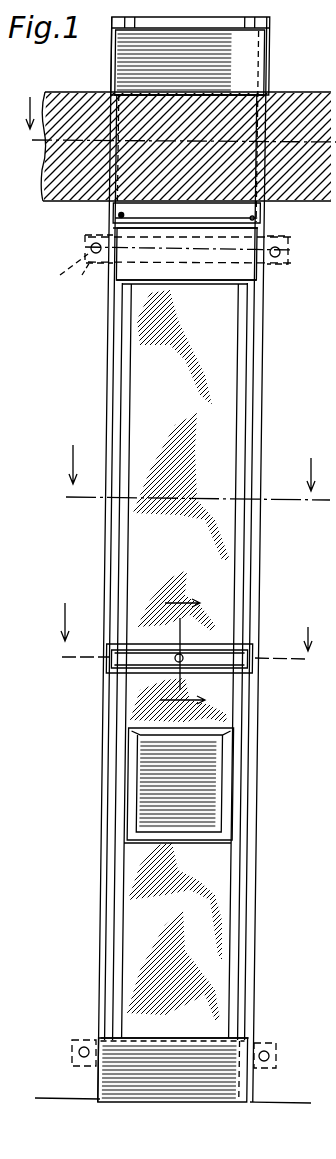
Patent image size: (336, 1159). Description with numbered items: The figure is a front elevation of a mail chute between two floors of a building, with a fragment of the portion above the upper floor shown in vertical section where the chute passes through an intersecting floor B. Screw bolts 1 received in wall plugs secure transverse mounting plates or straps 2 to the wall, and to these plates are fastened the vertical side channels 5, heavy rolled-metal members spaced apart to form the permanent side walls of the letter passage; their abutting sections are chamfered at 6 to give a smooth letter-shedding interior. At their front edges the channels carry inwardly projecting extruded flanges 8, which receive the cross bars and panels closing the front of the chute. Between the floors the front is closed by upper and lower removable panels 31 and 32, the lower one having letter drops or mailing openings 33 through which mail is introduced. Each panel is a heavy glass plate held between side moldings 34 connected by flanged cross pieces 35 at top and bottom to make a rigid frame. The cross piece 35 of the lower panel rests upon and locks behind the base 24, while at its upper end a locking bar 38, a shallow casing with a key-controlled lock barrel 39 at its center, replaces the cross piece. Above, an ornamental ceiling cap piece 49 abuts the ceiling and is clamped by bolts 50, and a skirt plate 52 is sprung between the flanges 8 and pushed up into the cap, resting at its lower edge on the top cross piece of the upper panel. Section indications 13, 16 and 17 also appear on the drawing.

The screw bolts 1 is at (88, 292).
The transverse mounting plates or straps 2 is at (264, 1050).
The vertical side channels 5 is at (279, 400).
The chamfered ends 6 is at (174, 123).
The outer extruded flanges 8 is at (108, 537).
The section line 13- 13 is at (52, 247).
The direction arrows / section 16 is at (182, 653).
The section line 17- 17 is at (58, 667).
The base 24 is at (266, 62).
The upper removable panel 31 is at (222, 366).
The lower removable panel 32 is at (212, 882).
The letter drops or mailing openings 33 is at (208, 763).
The moldings 34 is at (130, 585).
The flanged cross pieces 35 is at (248, 29).
The locking bar 38 is at (251, 651).
The key controlled lock barrel 39 is at (183, 655).
The ceiling cap piece 49 is at (260, 208).
The bolts 50 is at (120, 215).
The skirt plate 52 is at (224, 276).
The intersecting floor B is at (283, 101).